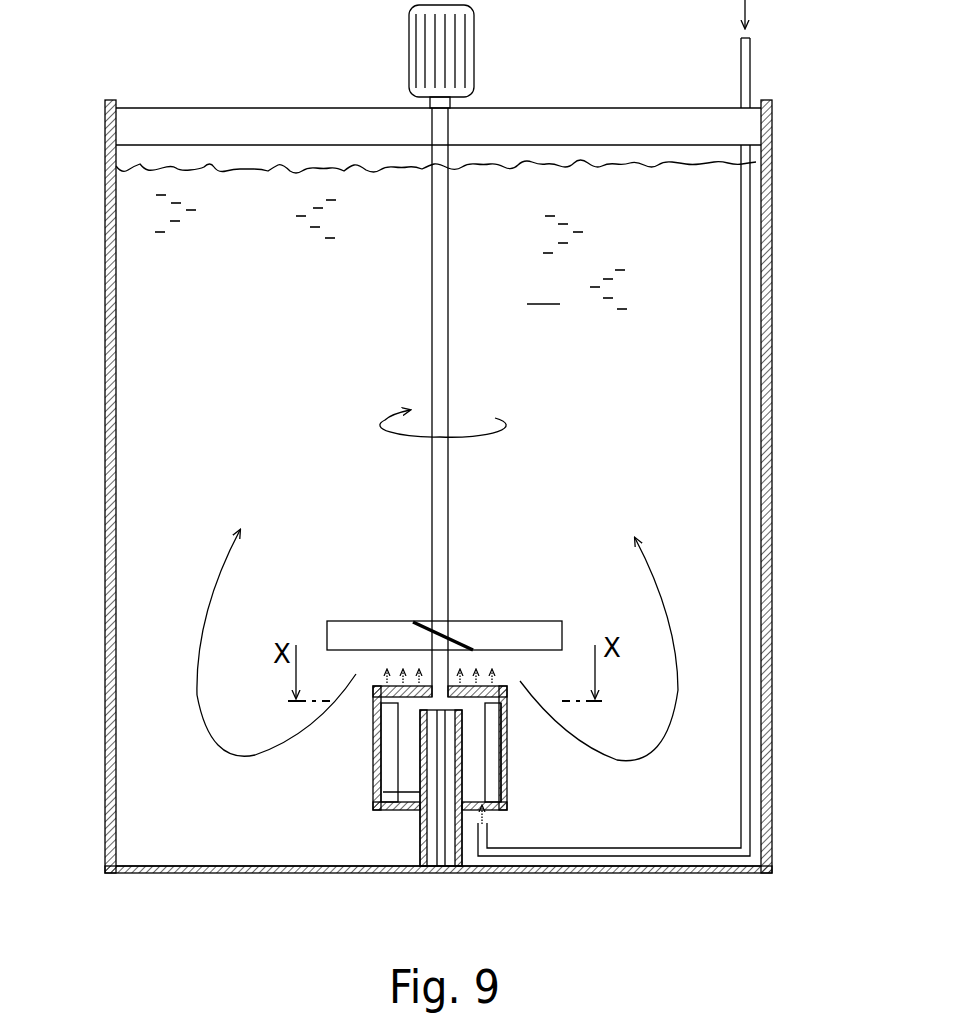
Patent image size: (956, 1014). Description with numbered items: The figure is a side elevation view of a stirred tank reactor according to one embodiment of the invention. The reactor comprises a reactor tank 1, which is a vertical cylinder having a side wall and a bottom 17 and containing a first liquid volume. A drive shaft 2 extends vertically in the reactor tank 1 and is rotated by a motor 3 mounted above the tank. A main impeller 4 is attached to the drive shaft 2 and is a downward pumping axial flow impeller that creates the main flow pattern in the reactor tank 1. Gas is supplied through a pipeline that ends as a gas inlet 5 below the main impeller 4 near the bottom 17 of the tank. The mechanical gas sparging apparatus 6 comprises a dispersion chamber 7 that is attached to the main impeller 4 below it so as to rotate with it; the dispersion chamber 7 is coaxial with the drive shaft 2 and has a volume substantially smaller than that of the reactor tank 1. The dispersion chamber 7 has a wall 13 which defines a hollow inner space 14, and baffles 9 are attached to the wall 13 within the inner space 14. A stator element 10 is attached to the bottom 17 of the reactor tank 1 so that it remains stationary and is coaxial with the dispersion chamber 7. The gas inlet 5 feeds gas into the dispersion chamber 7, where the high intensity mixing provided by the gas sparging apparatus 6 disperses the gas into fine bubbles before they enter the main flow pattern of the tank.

The reactor tank 1 is at (105, 304).
The drive shaft 2 is at (440, 220).
The motor 3 is at (409, 35).
The main impeller 4 is at (327, 627).
The gas inlet 5 is at (484, 823).
The gas sparging apparatus 6 is at (363, 748).
The dispersion chamber 7 is at (507, 763).
The baffles 9 is at (383, 787).
The stator element 10 is at (431, 777).
The wall 13 is at (501, 733).
The inner space 14 is at (401, 782).
The bottom 17 is at (280, 862).